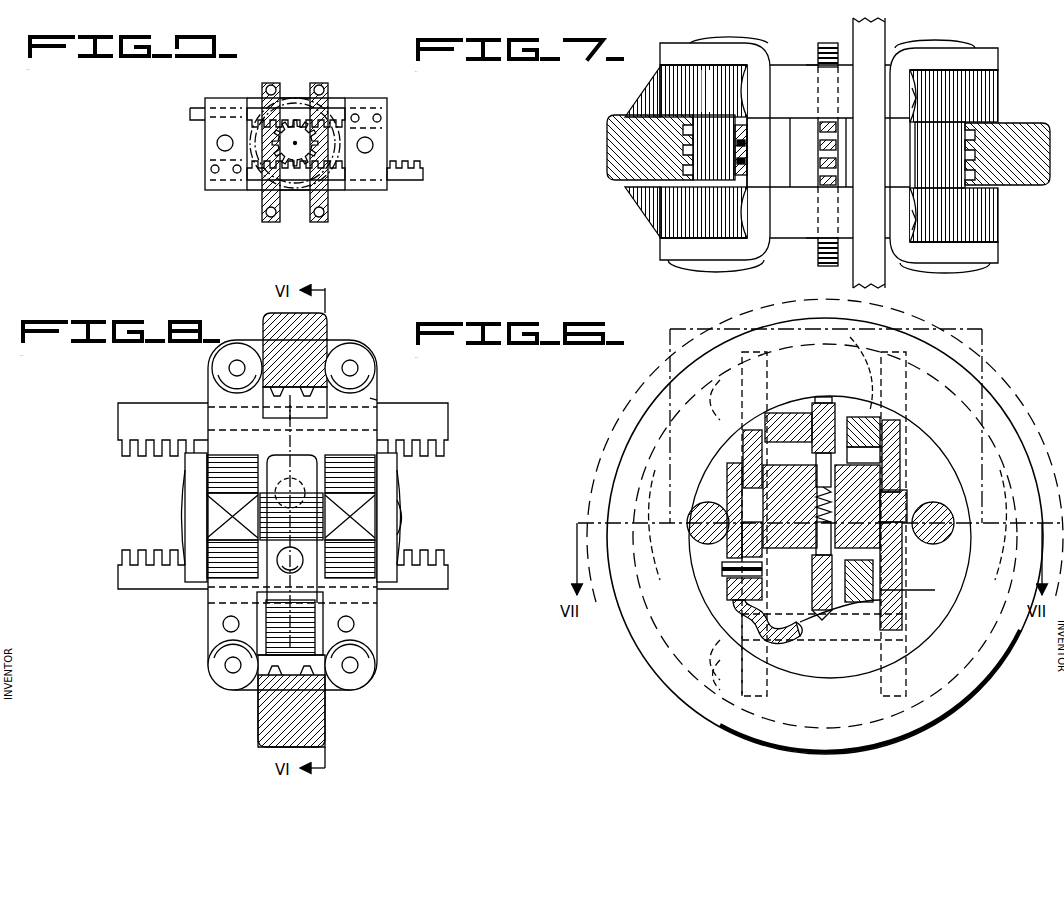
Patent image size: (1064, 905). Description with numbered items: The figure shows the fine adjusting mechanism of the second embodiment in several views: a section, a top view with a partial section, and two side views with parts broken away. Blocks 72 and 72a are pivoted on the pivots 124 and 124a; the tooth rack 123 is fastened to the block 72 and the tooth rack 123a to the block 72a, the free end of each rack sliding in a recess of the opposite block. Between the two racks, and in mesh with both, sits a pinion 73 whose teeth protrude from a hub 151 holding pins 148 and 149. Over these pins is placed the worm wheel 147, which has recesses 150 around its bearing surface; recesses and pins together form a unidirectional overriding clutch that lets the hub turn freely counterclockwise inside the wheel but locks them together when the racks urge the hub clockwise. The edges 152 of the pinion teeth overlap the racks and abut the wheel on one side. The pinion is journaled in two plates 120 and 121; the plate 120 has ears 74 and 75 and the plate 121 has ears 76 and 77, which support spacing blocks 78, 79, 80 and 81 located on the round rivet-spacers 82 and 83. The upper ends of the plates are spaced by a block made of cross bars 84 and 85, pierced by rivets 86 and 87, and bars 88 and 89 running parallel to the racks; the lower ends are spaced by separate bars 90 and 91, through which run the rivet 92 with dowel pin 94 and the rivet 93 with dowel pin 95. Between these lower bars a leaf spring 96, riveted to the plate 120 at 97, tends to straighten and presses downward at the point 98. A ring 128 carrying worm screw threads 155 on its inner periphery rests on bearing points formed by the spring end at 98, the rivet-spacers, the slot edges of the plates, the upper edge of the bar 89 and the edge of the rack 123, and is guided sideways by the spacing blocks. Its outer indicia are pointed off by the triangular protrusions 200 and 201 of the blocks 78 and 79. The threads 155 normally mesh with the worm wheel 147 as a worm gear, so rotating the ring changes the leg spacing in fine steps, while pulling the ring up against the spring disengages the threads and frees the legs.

In FIG. 9, the block 72 is at (388, 100).
In FIG. 9, the block 72a is at (207, 102).
In FIG. 9, the pinion 73 is at (262, 178).
In FIG. 6, the pinion 73 is at (898, 478).
In FIG. 7, the ear 74 is at (660, 252).
In FIG. 8, the ear 74 is at (400, 480).
In FIG. 7, the ear 75 is at (680, 50).
In FIG. 8, the ear 75 is at (190, 582).
In FIG. 6, the ear 75 is at (665, 580).
In FIG. 7, the ear 76 is at (990, 258).
In FIG. 7, the ear 77 is at (996, 62).
In FIG. 6, the ear 77 is at (975, 580).
In FIG. 7, the spacing block 78 is at (680, 200).
In FIG. 8, the spacing block 78 is at (343, 458).
In FIG. 7, the spacing block 79 is at (680, 92).
In FIG. 8, the spacing block 79 is at (215, 458).
In FIG. 6, the spacing block 79 is at (690, 560).
In FIG. 7, the spacing block 80 is at (996, 220).
In FIG. 7, the spacing block 81 is at (996, 98).
In FIG. 6, the spacing block 81 is at (950, 560).
In FIG. 7, the rivet-spacer 82 is at (700, 271).
In FIG. 8, the rivet-spacer 82 is at (400, 526).
In FIG. 6, the rivet-spacer 82 is at (700, 515).
In FIG. 7, the rivet-spacer 83 is at (945, 273).
In FIG. 6, the rivet-spacer 83 is at (930, 545).
In FIG. 9, the cross bar 84 is at (262, 100).
In FIG. 7, the cross bar 84 is at (808, 68).
In FIG. 9, the cross bar 85 is at (330, 100).
In FIG. 7, the cross bar 85 is at (790, 240).
In FIG. 9, the rivet 86 is at (271, 84).
In FIG. 7, the rivet 86 is at (912, 97).
In FIG. 8, the rivet 86 is at (212, 370).
In FIG. 9, the rivet 87 is at (320, 85).
In FIG. 7, the rivet 87 is at (912, 220).
In FIG. 8, the rivet 87 is at (348, 345).
In FIG. 7, the bar 88 is at (848, 130).
In FIG. 6, the bar 88 is at (850, 415).
In FIG. 7, the bar 89 is at (790, 116).
In FIG. 6, the bar 89 is at (775, 425).
In FIG. 9, the bar 90 is at (290, 165).
In FIG. 6, the bar 90 is at (880, 600).
In FIG. 9, the bar 91 is at (328, 212).
In FIG. 9, the rivet 92 is at (295, 217).
In FIG. 8, the rivet 92 is at (210, 668).
In FIG. 6, the rivet 92 is at (718, 675).
In FIG. 9, the rivet 93 is at (308, 171).
In FIG. 8, the rivet 93 is at (360, 658).
In FIG. 9, the dowel pin 94 is at (262, 205).
In FIG. 8, the dowel pin 94 is at (222, 627).
In FIG. 6, the dowel pin 94 is at (740, 630).
In FIG. 9, the dowel pin 95 is at (328, 198).
In FIG. 8, the dowel pin 95 is at (356, 626).
In FIG. 7, the leaf spring 96 is at (747, 150).
In FIG. 8, the leaf spring 96 is at (322, 620).
In FIG. 6, the leaf spring 96 is at (795, 640).
In FIG. 8, the rivet point 97 is at (288, 573).
In FIG. 6, the rivet point 97 is at (720, 568).
In FIG. 6, the point 98 is at (826, 660).
In FIG. 7, the plate 120 is at (760, 170).
In FIG. 8, the plate 120 is at (370, 400).
In FIG. 6, the plate 120 is at (745, 450).
In FIG. 7, the plate 121 is at (897, 158).
In FIG. 6, the plate 121 is at (895, 440).
In FIG. 9, the tooth rack 123 is at (336, 108).
In FIG. 7, the tooth rack 123 is at (880, 44).
In FIG. 8, the tooth rack 123 is at (440, 434).
In FIG. 6, the tooth rack 123 is at (885, 420).
In FIG. 9, the tooth rack 123a is at (424, 172).
In FIG. 8, the tooth rack 123a is at (440, 580).
In FIG. 6, the tooth rack 123a is at (910, 590).
In FIG. 9, the pivot 124 is at (373, 146).
In FIG. 9, the pivot 124a is at (222, 146).
In FIG. 8, the ring 128 is at (327, 325).
In FIG. 6, the ring 128 is at (640, 668).
In FIG. 9, the worm wheel 147 is at (298, 98).
In FIG. 7, the worm wheel 147 is at (826, 46).
In FIG. 8, the worm wheel 147 is at (380, 430).
In FIG. 6, the worm wheel 147 is at (820, 400).
In FIG. 6, the pin 148 is at (816, 462).
In FIG. 6, the pin 149 is at (814, 545).
In FIG. 6, the recess 150 is at (810, 580).
In FIG. 9, the hub 151 is at (330, 196).
In FIG. 6, the hub 151 is at (728, 490).
In FIG. 6, the edge 152 is at (846, 602).
In FIG. 7, the worm screw thread 155 is at (700, 125).
In FIG. 8, the worm screw thread 155 is at (268, 405).
In FIG. 8, the triangular shaped protrusion 200 is at (378, 515).
In FIG. 8, the triangular shaped protrusion 201 is at (210, 515).